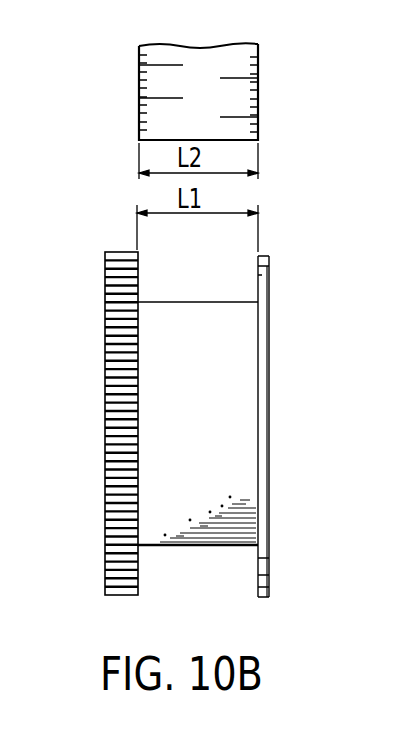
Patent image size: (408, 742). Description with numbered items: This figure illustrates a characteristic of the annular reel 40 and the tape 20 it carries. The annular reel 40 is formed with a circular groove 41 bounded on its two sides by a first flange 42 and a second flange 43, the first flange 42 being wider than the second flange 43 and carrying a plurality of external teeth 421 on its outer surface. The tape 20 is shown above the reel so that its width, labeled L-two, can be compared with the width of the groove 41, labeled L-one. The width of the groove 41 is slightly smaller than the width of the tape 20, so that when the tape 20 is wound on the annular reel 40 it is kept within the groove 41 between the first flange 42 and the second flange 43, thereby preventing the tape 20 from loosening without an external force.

The tape 20 is at (237, 100).
The annular reel 40 is at (177, 430).
The circular groove 41 is at (211, 535).
The first flange 42 is at (85, 413).
The external teeth 421 is at (116, 372).
The second flange 43 is at (262, 380).